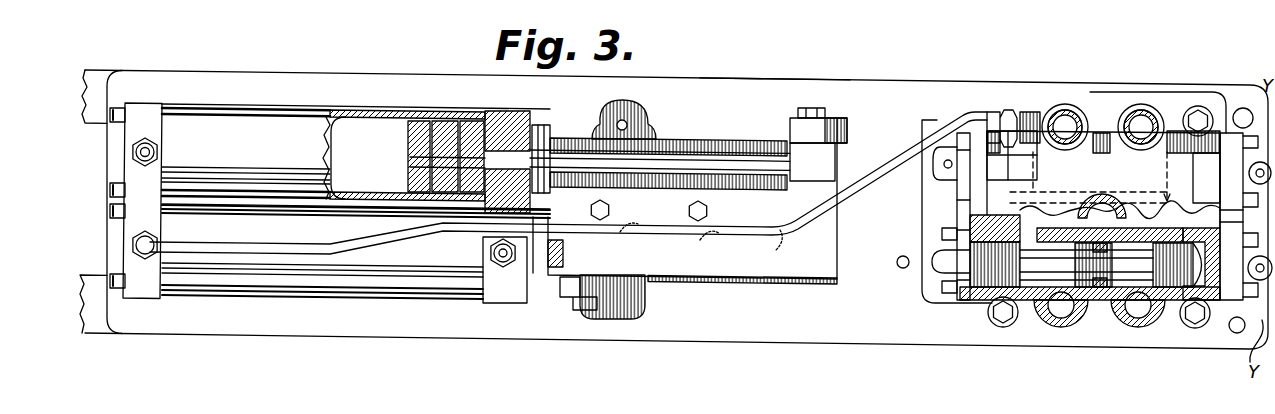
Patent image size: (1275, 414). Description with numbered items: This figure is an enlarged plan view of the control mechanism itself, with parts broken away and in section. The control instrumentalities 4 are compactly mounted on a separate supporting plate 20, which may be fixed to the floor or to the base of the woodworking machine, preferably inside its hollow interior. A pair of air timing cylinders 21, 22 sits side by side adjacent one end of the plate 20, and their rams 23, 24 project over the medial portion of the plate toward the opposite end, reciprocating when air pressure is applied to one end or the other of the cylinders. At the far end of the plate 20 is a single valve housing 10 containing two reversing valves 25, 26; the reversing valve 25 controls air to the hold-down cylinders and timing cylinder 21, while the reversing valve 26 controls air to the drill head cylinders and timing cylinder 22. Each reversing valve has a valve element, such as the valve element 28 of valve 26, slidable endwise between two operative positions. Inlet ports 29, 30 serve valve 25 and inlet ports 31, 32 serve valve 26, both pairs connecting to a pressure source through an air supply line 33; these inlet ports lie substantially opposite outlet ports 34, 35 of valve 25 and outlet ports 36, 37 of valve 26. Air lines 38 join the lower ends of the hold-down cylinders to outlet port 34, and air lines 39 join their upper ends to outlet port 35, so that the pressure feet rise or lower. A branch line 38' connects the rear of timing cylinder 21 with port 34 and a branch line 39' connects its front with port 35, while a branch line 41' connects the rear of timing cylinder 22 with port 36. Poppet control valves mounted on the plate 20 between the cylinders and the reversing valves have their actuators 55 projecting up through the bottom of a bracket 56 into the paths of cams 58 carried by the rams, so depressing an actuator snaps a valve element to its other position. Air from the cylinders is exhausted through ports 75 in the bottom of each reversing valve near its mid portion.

The control instrumentalities 4 is at (782, 77).
The valve housing 10 is at (1010, 165).
The supporting plate 20 is at (742, 313).
The timing cylinder 21 is at (413, 253).
The timing cylinder 22 is at (265, 153).
The ram 23 is at (557, 268).
The ram 24 is at (553, 150).
The reversing valve 25 is at (1197, 160).
The reversing valve 26 is at (1224, 292).
The valve element 28 is at (1153, 302).
The inlet port 29 is at (1035, 177).
The inlet port 30 is at (1173, 200).
The inlet port 31 is at (1035, 215).
The inlet port 32 is at (1177, 221).
The air supply line 33 is at (1100, 206).
The outlet port 34 is at (1068, 124).
The outlet port 35 is at (1143, 126).
The outlet port 36 is at (1058, 308).
The outlet port 37 is at (1134, 310).
The air lines 38 is at (1044, 95).
The air lines 39 is at (1143, 95).
The branch line 41' is at (166, 96).
The branch line 38' is at (560, 239).
The branch line 39' is at (483, 304).
The actuator 55 is at (626, 122).
The bracket 56 is at (769, 258).
The cam 58 is at (832, 114).
The exhaust port 75 is at (1102, 244).